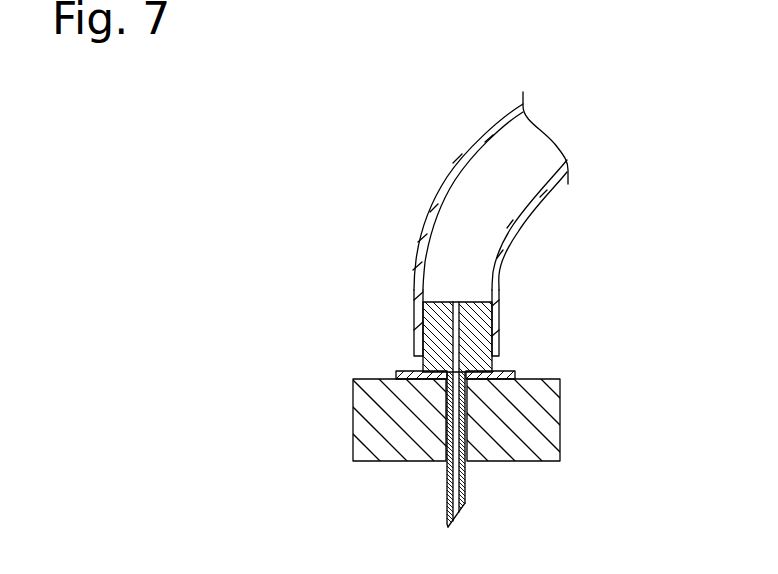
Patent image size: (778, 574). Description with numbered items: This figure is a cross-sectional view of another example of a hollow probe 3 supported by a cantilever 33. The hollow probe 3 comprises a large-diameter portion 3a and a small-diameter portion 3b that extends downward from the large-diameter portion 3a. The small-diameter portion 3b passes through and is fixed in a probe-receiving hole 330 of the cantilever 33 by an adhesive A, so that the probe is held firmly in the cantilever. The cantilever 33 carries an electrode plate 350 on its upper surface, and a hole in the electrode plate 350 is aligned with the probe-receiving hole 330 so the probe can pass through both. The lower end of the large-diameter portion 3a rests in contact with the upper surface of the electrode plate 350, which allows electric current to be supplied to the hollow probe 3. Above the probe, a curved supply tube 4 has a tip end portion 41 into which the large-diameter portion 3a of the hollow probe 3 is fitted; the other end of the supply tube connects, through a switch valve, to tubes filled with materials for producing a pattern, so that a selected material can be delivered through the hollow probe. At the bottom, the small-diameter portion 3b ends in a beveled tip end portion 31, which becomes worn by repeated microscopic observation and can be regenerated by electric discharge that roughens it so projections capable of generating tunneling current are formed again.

The supply tube 4 is at (476, 224).
The tip end portion 41 is at (497, 340).
The large-diameter portion 3a is at (433, 333).
The electrode plate 350 is at (515, 376).
The cantilever 33 is at (363, 409).
The adhesive A is at (468, 413).
The hollow probe 3 is at (456, 434).
The small-diameter portion 3b is at (447, 485).
The probe-receiving hole 330 is at (458, 440).
The tip end portion 31 is at (449, 528).